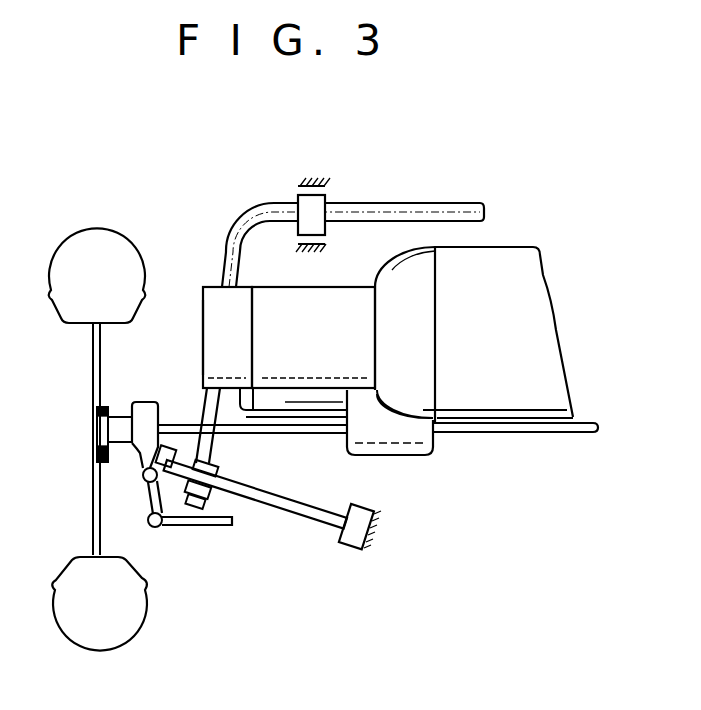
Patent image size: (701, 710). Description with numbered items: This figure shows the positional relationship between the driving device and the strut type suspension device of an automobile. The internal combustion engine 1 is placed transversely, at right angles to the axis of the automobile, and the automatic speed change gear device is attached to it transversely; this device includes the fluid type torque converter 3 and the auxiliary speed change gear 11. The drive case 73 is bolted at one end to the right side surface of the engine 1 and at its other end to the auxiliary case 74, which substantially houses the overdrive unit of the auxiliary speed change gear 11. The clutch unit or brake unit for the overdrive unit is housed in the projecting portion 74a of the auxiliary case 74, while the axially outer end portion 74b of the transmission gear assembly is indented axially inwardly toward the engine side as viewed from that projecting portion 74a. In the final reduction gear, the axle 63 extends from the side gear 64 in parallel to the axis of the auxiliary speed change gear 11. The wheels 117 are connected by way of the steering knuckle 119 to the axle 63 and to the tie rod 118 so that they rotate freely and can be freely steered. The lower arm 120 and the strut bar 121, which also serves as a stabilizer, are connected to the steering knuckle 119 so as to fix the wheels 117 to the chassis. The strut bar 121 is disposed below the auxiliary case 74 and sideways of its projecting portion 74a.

The internal combustion engine 1 is at (506, 270).
The fluid type torque converter 3 is at (410, 357).
The auxiliary speed change gear 11 is at (350, 308).
The axle 63 is at (322, 430).
The side gear 64 is at (510, 430).
The drive case 73 is at (295, 302).
The auxiliary case 74 is at (218, 298).
The projecting portion of auxiliary case 74a is at (203, 332).
The axially outer end portion 74b is at (238, 400).
The wheels 117 is at (108, 245).
The tie rod 118 is at (203, 526).
The steering knuckle 119 is at (145, 414).
The lower arm 120 is at (303, 509).
The strut bar 121 is at (410, 210).